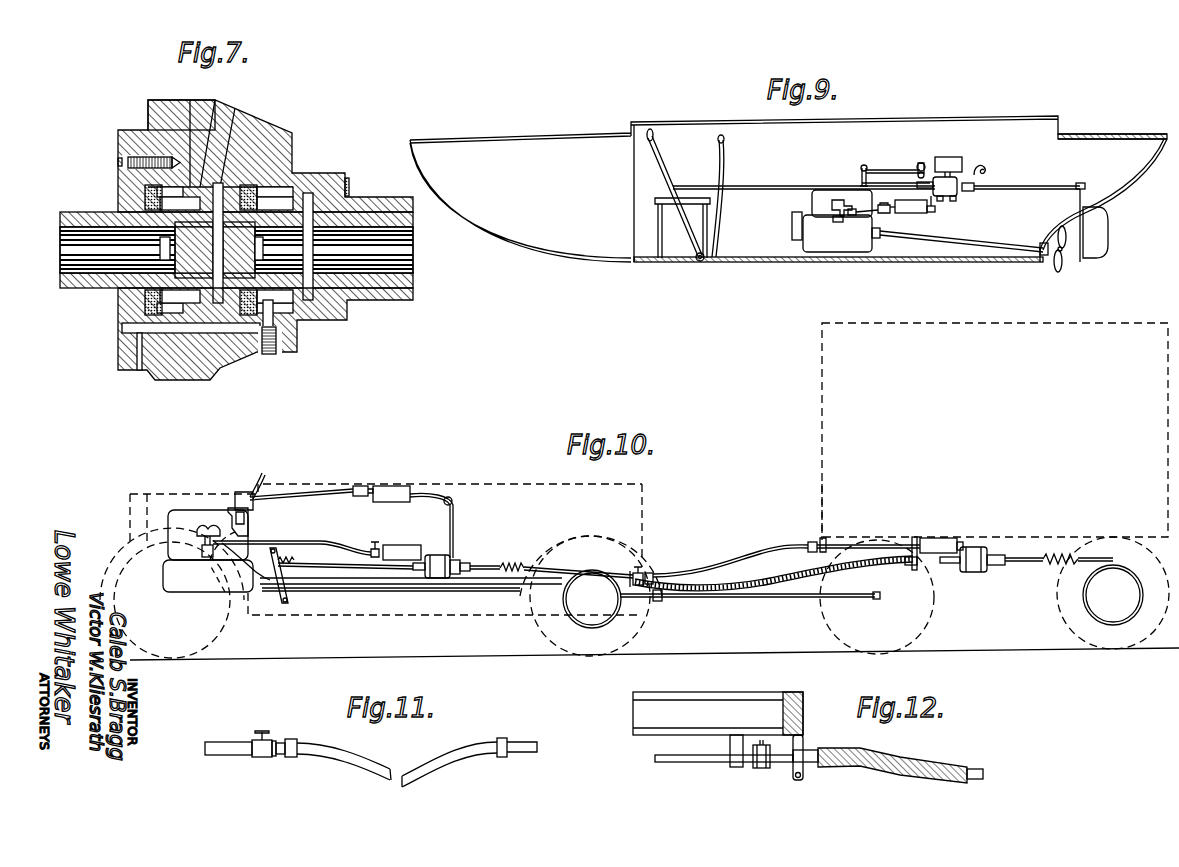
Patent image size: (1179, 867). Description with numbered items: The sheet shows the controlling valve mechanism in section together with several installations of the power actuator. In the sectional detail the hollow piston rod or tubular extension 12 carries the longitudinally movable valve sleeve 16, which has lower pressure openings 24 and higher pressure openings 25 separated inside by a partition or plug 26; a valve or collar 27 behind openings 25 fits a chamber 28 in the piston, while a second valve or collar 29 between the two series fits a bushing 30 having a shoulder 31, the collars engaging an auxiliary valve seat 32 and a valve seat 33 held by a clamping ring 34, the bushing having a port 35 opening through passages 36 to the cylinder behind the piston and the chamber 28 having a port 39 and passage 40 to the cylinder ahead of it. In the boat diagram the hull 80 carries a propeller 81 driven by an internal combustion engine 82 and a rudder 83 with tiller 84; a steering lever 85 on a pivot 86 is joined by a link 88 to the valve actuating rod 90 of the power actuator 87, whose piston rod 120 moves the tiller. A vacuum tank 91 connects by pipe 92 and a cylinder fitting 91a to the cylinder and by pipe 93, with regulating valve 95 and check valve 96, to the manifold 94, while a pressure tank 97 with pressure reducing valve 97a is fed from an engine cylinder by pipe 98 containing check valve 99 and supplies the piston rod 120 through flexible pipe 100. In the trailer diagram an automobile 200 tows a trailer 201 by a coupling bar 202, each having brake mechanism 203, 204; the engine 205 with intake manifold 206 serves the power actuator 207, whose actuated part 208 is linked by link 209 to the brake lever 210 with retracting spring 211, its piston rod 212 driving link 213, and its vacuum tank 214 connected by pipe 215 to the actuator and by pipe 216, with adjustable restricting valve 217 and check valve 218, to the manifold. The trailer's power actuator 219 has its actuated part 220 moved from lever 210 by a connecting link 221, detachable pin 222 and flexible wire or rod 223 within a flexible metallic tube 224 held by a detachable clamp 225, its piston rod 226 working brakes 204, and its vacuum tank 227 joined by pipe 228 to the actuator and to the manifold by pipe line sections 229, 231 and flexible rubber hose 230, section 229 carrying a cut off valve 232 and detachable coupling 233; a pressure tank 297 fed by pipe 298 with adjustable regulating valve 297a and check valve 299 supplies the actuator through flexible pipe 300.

In FIG. 7, the tubular extension 12 is at (368, 205).
In FIG. 7, the valve sleeve 16 is at (82, 212).
In FIG. 7, the lower pressure openings 24 is at (166, 250).
In FIG. 7, the higher pressure openings 25 is at (262, 258).
In FIG. 7, the partition or plug 26 is at (172, 272).
In FIG. 7, the valve or collar 27 is at (348, 188).
In FIG. 7, the chamber 28 is at (300, 185).
In FIG. 7, the valve or collar 29 is at (205, 318).
In FIG. 7, the bushing 30 is at (188, 150).
In FIG. 7, the shoulder 31 is at (250, 170).
In FIG. 7, the auxiliary valve seat 32 is at (292, 170).
In FIG. 7, the valve seat 33 is at (145, 193).
In FIG. 7, the clamping ring 34 is at (120, 148).
In FIG. 7, the port 35 is at (214, 182).
In FIG. 7, the passages 36 is at (228, 185).
In FIG. 7, the port 39 is at (276, 340).
In FIG. 7, the passage 40 is at (124, 332).
In FIG. 9, the hull 80 is at (620, 255).
In FIG. 9, the propeller 81 is at (1060, 262).
In FIG. 9, the internal combustion engine 82 is at (830, 248).
In FIG. 9, the rudder 83 is at (1106, 240).
In FIG. 9, the tiller 84 is at (1080, 184).
In FIG. 9, the steering lever 85 is at (665, 172).
In FIG. 9, the pivot 86 is at (700, 263).
In FIG. 9, the power actuator 87 is at (957, 198).
In FIG. 9, the link 88 is at (745, 186).
In FIG. 9, the valve actuating rod 90 is at (921, 163).
In FIG. 9, the vacuum tank 91 is at (912, 210).
In FIG. 9, the cylinder fitting 91a is at (934, 211).
In FIG. 9, the pipe 92 is at (942, 170).
In FIG. 9, the pipe 93 is at (866, 180).
In FIG. 9, the manifold 94 is at (838, 205).
In FIG. 9, the regulating valve 95 is at (852, 215).
In FIG. 9, the check valve 96 is at (884, 212).
In FIG. 9, the pressure tank 97 is at (962, 165).
In FIG. 9, the pressure reducing valve 97a is at (945, 156).
In FIG. 9, the pipe 98 is at (892, 170).
In FIG. 9, the check valve 99 is at (870, 170).
In FIG. 9, the flexible pipe 100 is at (985, 170).
In FIG. 9, the piston rod 120 is at (985, 186).
In FIG. 10, the automobile 200 is at (400, 488).
In FIG. 10, the trailer 201 is at (822, 390).
In FIG. 10, the coupling bar 202 is at (760, 598).
In FIG. 10, the brake mechanism 203 is at (596, 570).
In FIG. 10, the brake mechanism 204 is at (1118, 562).
In FIG. 10, the internal combustion engine 205 is at (190, 510).
In FIG. 10, the intake manifold 206 is at (218, 530).
In FIG. 10, the power actuator 207 is at (457, 562).
In FIG. 10, the actuated part 208 is at (418, 572).
In FIG. 10, the link 209 is at (345, 570).
In FIG. 10, the brake lever 210 is at (276, 552).
In FIG. 10, the retracting spring 211 is at (294, 560).
In FIG. 10, the piston rod 212 is at (465, 572).
In FIG. 10, the link 213 is at (503, 562).
In FIG. 10, the vacuum tank 214 is at (410, 545).
In FIG. 10, the pipe 215 is at (452, 556).
In FIG. 10, the pipe 216 is at (335, 548).
In FIG. 10, the adjustable restricting valve 217 is at (248, 520).
In FIG. 10, the check valve 218 is at (376, 548).
In FIG. 10, the power actuator 219 is at (987, 556).
In FIG. 10, the actuated part 220 is at (962, 560).
In FIG. 10, the connecting link 221 is at (308, 592).
In FIG. 12, the connecting link 221 is at (700, 762).
In FIG. 12, the detachable pin 222 is at (763, 768).
In FIG. 10, the flexible wire or rod 223 is at (912, 568).
In FIG. 12, the flexible wire or rod 223 is at (985, 776).
In FIG. 10, the flexible metallic tube 224 is at (710, 592).
In FIG. 12, the flexible metallic tube 224 is at (950, 767).
In FIG. 12, the detachable clamp 225 is at (807, 777).
In FIG. 10, the piston rod 226 is at (1000, 566).
In FIG. 10, the vacuum tank 227 is at (935, 540).
In FIG. 10, the pipe 228 is at (960, 546).
In FIG. 10, the pipe line section 229 is at (497, 572).
In FIG. 11, the pipe line section 229 is at (223, 742).
In FIG. 10, the flexible rubber hose 230 is at (755, 560).
In FIG. 11, the flexible rubber hose 230 is at (390, 765).
In FIG. 10, the pipe line section 231 is at (810, 547).
In FIG. 11, the pipe line section 231 is at (525, 742).
In FIG. 10, the cut off valve 232 is at (641, 572).
In FIG. 11, the cut off valve 232 is at (262, 757).
In FIG. 10, the detachable coupling 233 is at (652, 574).
In FIG. 11, the detachable coupling 233 is at (297, 742).
In FIG. 10, the pressure tank 297 is at (430, 493).
In FIG. 10, the adjustable regulating valve 297a is at (358, 487).
In FIG. 10, the pipe 298 is at (300, 492).
In FIG. 10, the check valve 299 is at (258, 492).
In FIG. 10, the flexible pipe 300 is at (453, 500).